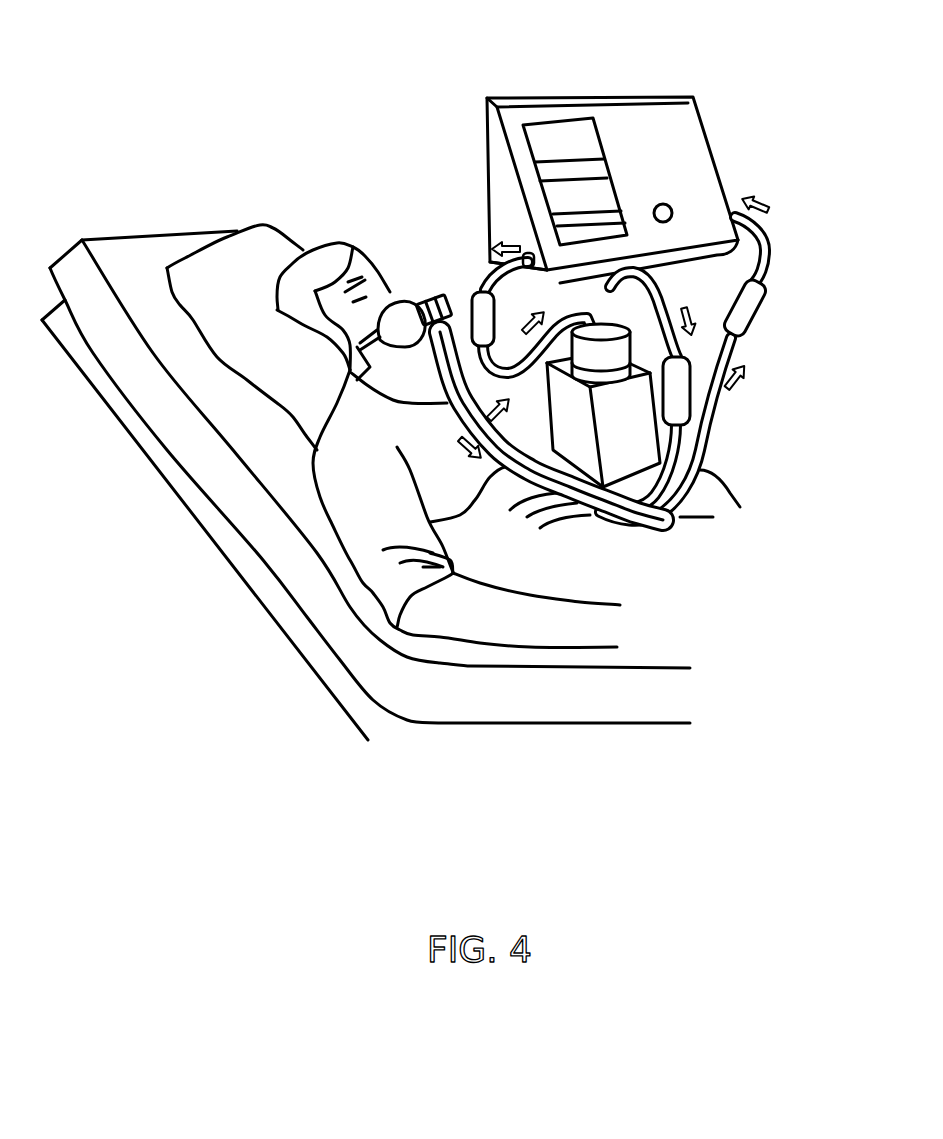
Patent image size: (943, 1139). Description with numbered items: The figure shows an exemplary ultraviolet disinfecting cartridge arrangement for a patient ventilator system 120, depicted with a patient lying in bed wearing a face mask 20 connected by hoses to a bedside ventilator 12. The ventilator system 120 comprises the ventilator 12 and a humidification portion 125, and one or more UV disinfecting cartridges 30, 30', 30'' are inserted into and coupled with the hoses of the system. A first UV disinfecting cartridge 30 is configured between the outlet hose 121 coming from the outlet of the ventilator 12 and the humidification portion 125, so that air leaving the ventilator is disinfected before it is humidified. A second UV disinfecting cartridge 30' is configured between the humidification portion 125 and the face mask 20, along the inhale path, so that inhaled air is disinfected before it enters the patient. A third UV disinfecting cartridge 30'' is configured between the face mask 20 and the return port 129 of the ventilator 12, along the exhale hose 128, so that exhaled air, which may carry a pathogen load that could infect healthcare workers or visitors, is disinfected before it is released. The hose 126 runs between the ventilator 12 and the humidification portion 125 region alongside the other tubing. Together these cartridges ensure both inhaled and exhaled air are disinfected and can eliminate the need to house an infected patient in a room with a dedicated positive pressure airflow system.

The ventilator system 120 is at (462, 110).
The ventilator 12 is at (627, 122).
The return port 129 is at (735, 192).
The outlet hose 121 is at (483, 270).
The UV disinfecting cartridge 30 is at (454, 290).
The face mask 20 is at (405, 303).
The tube 126 is at (665, 293).
The UV disinfecting cartridge 30'' is at (777, 329).
The humidification portion 125 is at (613, 353).
The UV disinfecting cartridge 30' is at (722, 420).
The exhale hose 128 is at (703, 467).